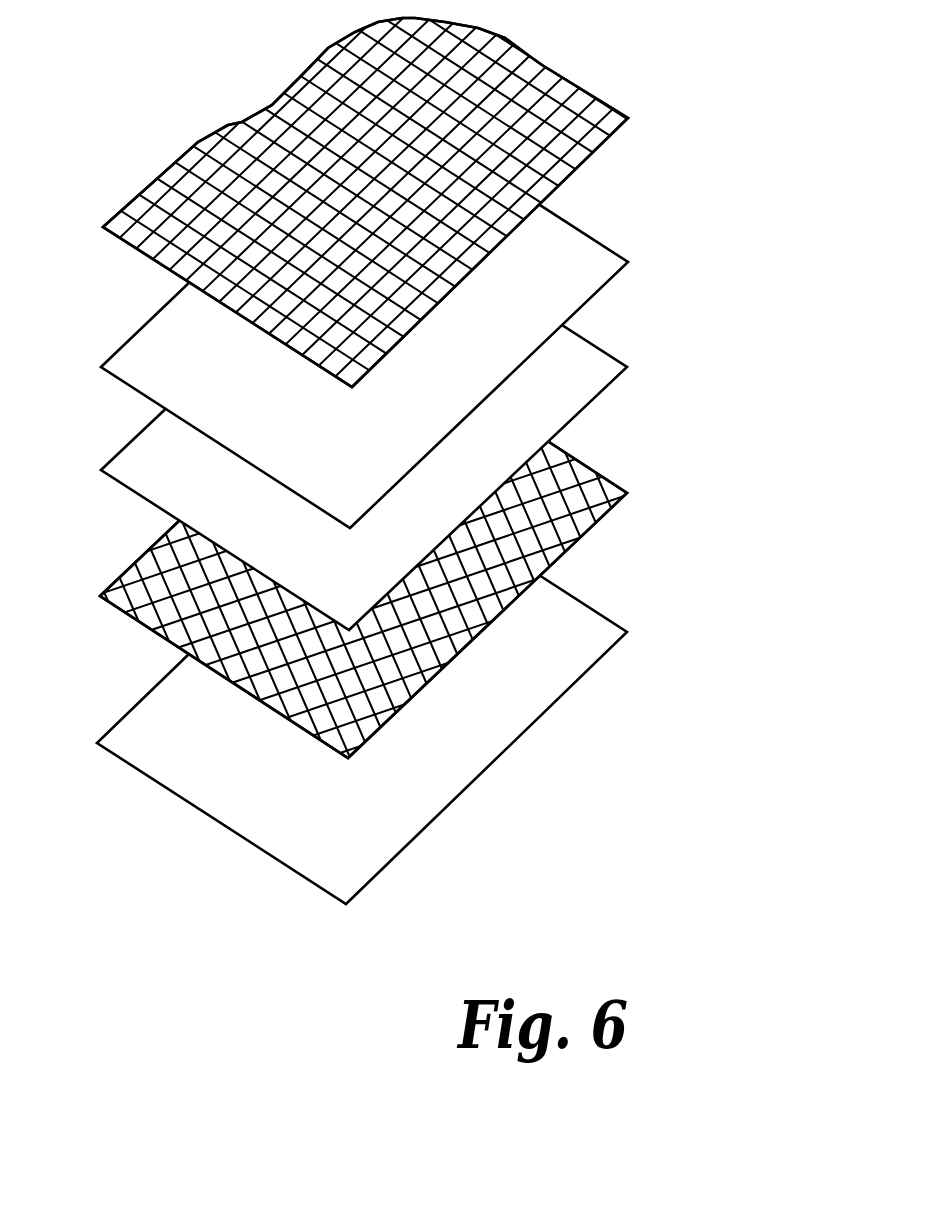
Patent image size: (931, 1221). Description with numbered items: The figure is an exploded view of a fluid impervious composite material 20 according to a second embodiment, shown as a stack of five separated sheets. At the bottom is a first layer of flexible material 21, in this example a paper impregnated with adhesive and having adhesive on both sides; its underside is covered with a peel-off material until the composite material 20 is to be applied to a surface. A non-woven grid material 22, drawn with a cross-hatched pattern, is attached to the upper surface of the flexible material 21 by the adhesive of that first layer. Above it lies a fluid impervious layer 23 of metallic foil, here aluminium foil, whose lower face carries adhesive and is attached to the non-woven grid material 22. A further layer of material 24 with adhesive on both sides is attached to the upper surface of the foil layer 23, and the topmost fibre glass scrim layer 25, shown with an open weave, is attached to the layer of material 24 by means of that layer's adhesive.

The composite material 20 is at (393, 452).
The first layer of flexible material 21 is at (422, 836).
The non-woven grid material 22 is at (590, 529).
The fluid impervious layer 23 is at (592, 403).
The further layer of material 24 is at (593, 298).
The fibre glass scrim layer 25 is at (603, 149).